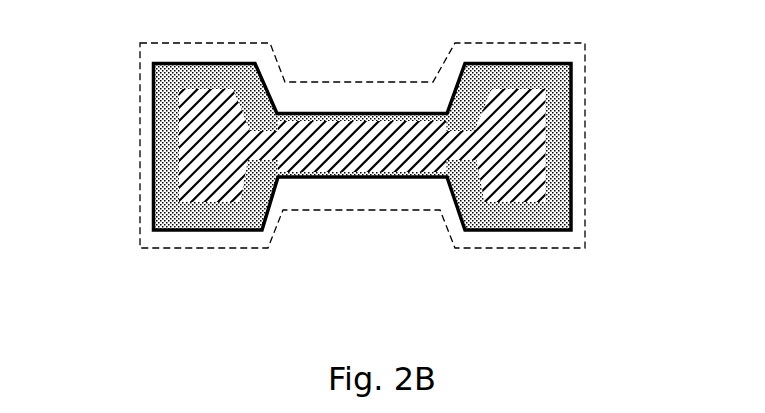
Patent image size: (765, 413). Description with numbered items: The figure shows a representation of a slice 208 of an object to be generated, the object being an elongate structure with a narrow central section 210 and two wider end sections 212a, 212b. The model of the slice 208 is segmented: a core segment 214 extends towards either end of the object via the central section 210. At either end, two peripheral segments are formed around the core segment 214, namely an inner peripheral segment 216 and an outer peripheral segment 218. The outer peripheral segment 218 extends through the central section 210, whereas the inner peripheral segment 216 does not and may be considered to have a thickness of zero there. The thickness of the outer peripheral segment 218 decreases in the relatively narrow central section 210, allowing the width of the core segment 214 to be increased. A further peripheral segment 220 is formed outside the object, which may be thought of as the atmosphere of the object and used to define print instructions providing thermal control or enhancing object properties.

The slice 208 is at (112, 73).
The central section 210 is at (452, 268).
The end section 212a is at (153, 268).
The end section 212b is at (572, 268).
The core segment 214 is at (543, 102).
The inner peripheral segment 216 is at (551, 141).
The outer peripheral segment 218 is at (566, 186).
The further peripheral segment 220 is at (581, 222).